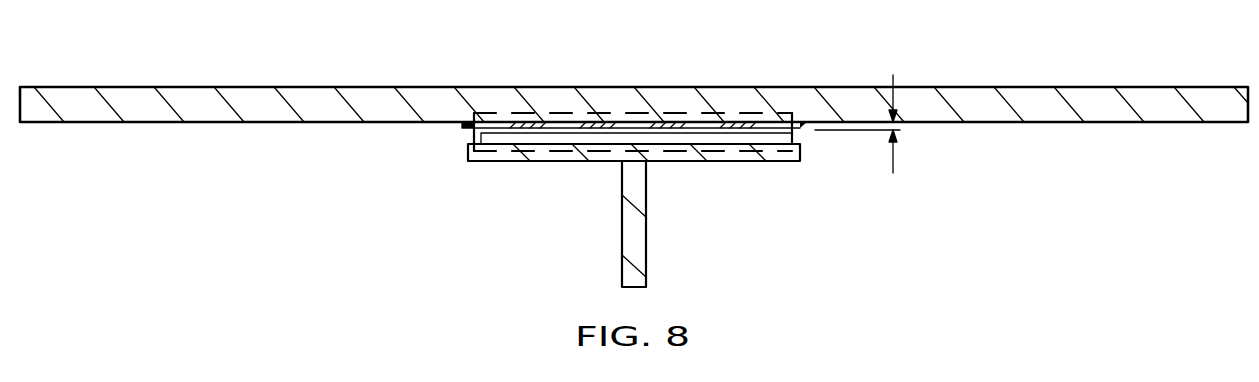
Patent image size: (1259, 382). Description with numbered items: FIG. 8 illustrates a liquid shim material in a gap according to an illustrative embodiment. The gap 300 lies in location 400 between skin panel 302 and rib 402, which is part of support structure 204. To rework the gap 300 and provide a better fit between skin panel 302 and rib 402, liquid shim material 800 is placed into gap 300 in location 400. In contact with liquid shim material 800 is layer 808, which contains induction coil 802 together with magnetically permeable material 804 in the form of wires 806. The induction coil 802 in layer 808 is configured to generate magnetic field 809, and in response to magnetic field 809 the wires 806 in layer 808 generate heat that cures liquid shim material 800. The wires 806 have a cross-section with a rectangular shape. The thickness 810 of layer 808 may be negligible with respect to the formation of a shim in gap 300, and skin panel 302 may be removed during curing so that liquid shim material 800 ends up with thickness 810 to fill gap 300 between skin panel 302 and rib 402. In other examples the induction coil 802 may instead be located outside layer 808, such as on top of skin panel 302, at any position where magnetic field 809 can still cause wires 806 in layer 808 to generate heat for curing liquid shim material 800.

The skin panel 302 is at (1081, 87).
The gap 300 is at (460, 137).
The location 400 is at (450, 133).
The magnetically permeable material 804 is at (633, 126).
The wires 806 is at (526, 124).
The magnetic field 809 is at (700, 112).
The induction coil 802 is at (773, 114).
The liquid shim material 800 is at (737, 135).
The layer 808 is at (805, 130).
The thickness 810 is at (894, 165).
The support structure 204 is at (646, 245).
The rib 402 is at (622, 225).